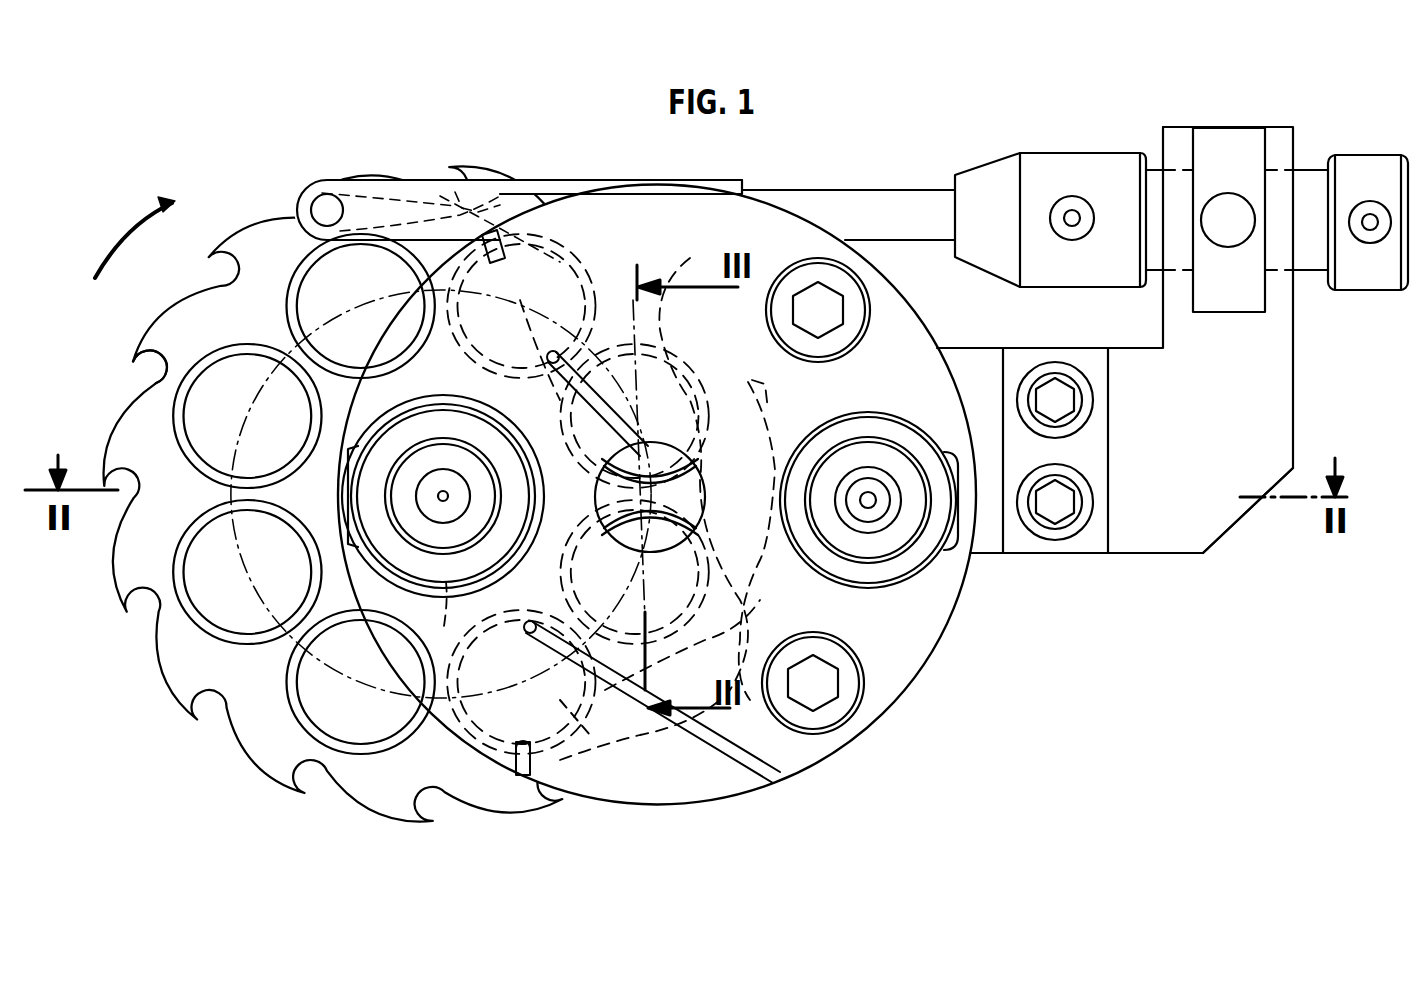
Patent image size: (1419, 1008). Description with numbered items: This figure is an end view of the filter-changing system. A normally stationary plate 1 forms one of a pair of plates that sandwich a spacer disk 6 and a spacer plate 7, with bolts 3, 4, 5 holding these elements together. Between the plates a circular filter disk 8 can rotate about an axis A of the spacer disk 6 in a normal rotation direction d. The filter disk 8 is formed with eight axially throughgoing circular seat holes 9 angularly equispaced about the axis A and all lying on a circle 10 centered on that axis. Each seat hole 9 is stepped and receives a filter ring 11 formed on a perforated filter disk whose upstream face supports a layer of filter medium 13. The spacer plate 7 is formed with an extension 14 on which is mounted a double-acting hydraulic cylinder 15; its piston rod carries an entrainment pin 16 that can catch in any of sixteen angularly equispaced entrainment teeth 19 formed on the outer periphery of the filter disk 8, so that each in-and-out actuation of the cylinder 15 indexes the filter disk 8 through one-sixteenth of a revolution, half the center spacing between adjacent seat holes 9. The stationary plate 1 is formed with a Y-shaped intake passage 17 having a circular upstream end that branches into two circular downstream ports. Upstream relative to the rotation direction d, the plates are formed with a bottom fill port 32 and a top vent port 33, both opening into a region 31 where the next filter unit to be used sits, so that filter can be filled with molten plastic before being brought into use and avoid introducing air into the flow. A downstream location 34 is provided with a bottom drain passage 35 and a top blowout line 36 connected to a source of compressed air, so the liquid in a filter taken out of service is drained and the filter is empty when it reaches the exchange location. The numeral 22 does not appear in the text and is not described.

The stationary plate 1 is at (892, 672).
The bolt 3 is at (466, 505).
The bolt 4 is at (880, 512).
The bolt 5 is at (832, 316).
The spacer disk 6 is at (439, 621).
The spacer plate 7 is at (972, 368).
The filter disk 8 is at (232, 322).
The seat hole 9 is at (192, 618).
The circle 10 is at (302, 342).
The filter ring 11 is at (214, 658).
The filter medium 13 is at (246, 692).
The extension 14 is at (1200, 552).
The hydraulic cylinder 15 is at (1313, 262).
The entrainment pin 16 is at (310, 206).
The intake passage 17 is at (707, 513).
The entrainment teeth 19 is at (152, 358).
The cam 22 is at (717, 462).
The region 31 is at (596, 280).
The fill port 32 is at (494, 232).
The vent port 33 is at (625, 300).
The downstream location 34 is at (588, 748).
The drain passage 35 is at (520, 768).
The blowout line 36 is at (733, 745).
The axis A is at (445, 494).
The rotation direction d is at (132, 238).